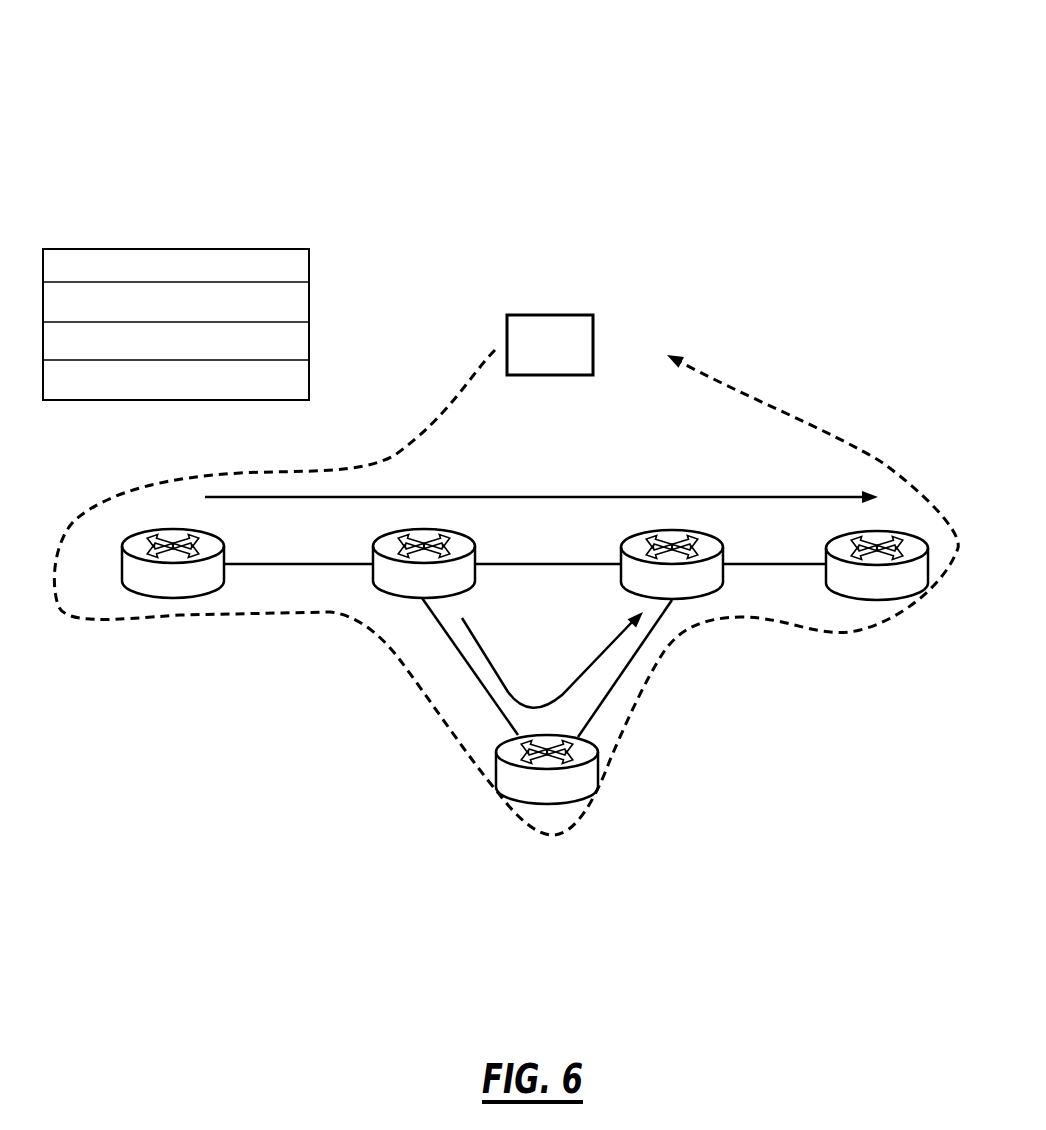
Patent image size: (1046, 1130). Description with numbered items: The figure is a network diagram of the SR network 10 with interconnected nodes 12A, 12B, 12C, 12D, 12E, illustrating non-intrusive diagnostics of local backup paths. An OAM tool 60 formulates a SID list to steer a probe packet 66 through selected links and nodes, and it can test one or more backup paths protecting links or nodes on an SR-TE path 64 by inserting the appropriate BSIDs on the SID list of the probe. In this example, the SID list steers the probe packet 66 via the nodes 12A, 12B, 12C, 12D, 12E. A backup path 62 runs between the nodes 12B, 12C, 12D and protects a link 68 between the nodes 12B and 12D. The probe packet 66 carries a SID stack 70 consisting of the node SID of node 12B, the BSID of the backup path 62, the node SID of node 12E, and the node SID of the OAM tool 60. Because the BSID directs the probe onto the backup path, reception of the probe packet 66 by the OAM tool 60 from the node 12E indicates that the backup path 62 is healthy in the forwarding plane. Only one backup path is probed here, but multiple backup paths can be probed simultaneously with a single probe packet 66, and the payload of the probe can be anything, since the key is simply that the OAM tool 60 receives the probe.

The SR network 10 is at (508, 66).
The node 12A is at (158, 598).
The node 12B is at (375, 598).
The node 12C is at (527, 807).
The node 12D is at (725, 552).
The node 12E is at (903, 598).
The OAM tool 60 is at (593, 345).
The backup path 62 is at (488, 667).
The SR-TE path 64 is at (570, 496).
The probe packet 66 is at (762, 403).
The link 68 is at (520, 564).
The SID stack 70 is at (233, 182).